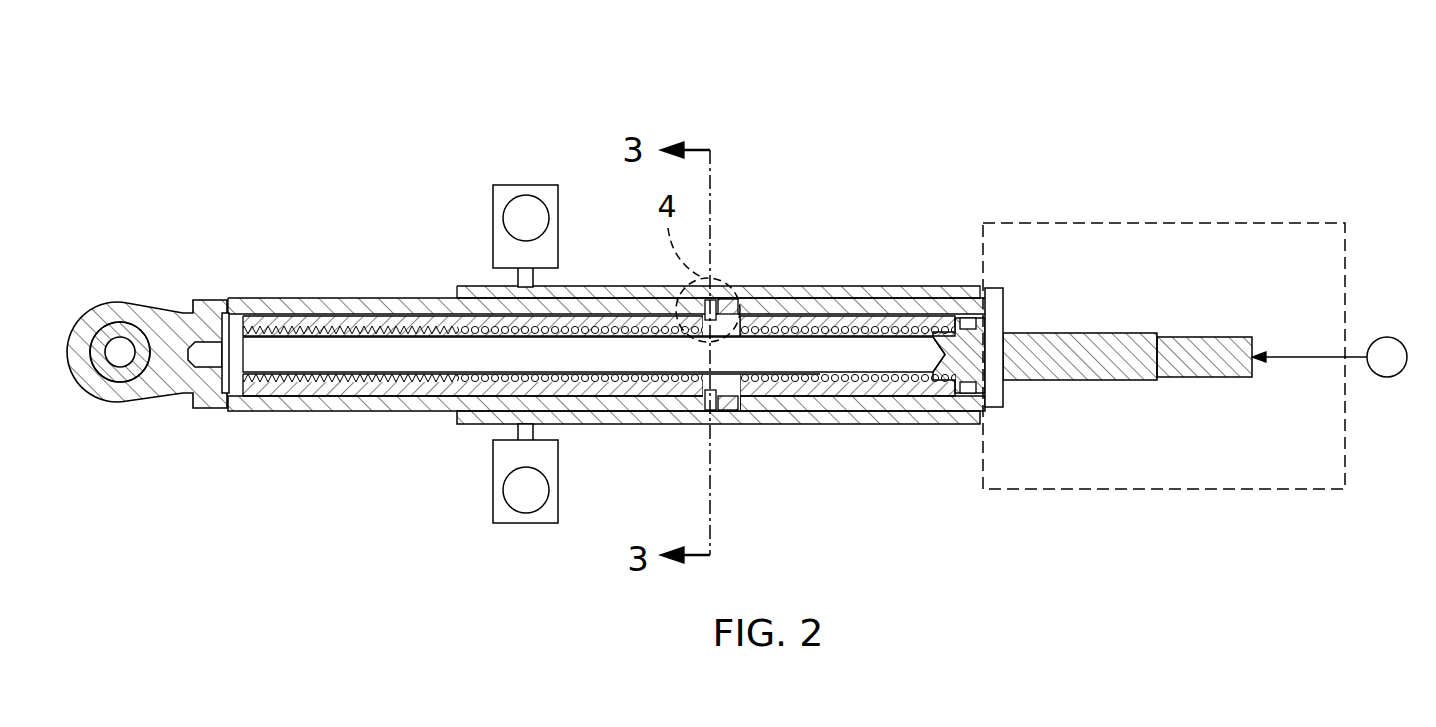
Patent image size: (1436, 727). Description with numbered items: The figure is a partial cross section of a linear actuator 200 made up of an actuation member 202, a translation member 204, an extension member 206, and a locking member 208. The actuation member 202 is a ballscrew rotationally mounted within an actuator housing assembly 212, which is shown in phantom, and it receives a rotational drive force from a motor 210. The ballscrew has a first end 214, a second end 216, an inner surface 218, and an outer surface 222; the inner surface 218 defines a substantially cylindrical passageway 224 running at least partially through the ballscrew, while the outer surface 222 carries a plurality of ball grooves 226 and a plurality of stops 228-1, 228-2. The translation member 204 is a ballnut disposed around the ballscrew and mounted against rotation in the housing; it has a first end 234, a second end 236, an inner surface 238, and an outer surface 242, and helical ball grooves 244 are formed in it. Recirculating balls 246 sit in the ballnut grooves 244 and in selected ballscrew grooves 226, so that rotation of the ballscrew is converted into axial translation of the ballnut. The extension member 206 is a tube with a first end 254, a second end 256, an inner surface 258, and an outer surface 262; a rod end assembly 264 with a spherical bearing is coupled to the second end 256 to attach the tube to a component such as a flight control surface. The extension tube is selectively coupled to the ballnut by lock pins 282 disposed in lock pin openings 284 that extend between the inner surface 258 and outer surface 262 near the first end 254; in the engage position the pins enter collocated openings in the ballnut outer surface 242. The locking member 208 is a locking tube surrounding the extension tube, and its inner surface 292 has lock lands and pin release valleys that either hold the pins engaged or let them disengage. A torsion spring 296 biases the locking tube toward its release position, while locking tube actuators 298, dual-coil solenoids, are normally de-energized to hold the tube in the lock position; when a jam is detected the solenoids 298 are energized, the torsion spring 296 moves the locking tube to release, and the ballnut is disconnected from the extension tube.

The actuator 200 is at (227, 186).
The actuation member 202 is at (1107, 333).
The translation member 204 is at (870, 298).
The extension member 206 is at (287, 298).
The locking member 208 is at (790, 298).
The motor 210 is at (1388, 337).
The actuator housing assembly 212 is at (1222, 223).
The first end 214 is at (1255, 343).
The second end 216 is at (227, 315).
The inner surface 218 is at (302, 338).
The outer surface 222 is at (352, 396).
The cylindrical passageway 224 is at (475, 366).
The ball grooves 226 is at (355, 320).
The stop 228-1 is at (995, 410).
The stop 228-2 is at (228, 395).
The first end 234 is at (962, 318).
The second end 236 is at (455, 318).
The inner surface 238 is at (898, 372).
The outer surface 242 is at (906, 400).
The ball grooves 244 is at (840, 387).
The recirculating balls 246 is at (797, 386).
The first end 254 is at (750, 410).
The second end 256 is at (180, 305).
The inner surface 258 is at (612, 318).
The outer surface 262 is at (608, 424).
The rod end assembly 264 is at (125, 402).
The lock pins 282 is at (716, 292).
The lock pin openings 284 is at (705, 400).
The inner surface 292 is at (570, 300).
The torsion spring 296 is at (1003, 395).
The locking tube actuators 298 is at (527, 185).